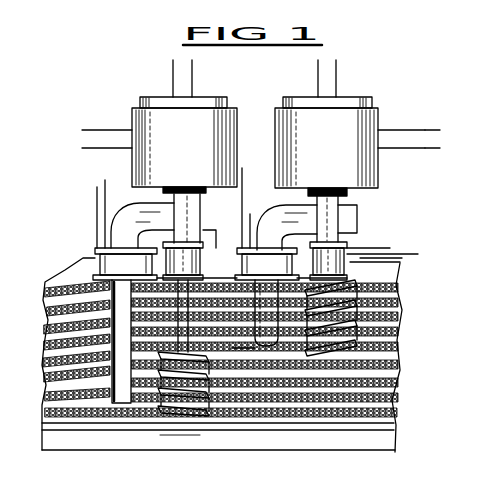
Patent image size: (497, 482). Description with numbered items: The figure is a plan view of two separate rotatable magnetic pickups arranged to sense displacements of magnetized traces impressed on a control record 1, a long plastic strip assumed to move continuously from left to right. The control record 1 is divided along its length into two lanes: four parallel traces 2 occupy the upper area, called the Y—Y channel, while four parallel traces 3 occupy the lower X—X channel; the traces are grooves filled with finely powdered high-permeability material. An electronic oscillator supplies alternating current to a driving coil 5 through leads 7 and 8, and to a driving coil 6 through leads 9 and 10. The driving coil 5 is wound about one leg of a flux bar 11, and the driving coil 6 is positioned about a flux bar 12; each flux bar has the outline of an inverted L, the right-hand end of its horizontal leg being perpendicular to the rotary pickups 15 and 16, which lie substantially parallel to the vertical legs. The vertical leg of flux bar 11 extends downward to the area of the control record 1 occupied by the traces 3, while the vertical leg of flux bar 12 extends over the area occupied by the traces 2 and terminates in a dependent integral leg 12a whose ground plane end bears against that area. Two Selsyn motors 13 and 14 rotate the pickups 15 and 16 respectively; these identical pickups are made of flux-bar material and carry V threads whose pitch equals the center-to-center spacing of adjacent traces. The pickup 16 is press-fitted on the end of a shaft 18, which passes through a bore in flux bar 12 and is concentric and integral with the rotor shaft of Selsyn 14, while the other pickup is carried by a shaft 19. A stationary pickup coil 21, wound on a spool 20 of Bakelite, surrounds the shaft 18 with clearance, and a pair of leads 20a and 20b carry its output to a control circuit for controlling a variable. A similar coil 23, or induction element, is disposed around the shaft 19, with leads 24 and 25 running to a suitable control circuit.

The control record 1 is at (340, 438).
The traces 2 is at (400, 287).
The traces 3 is at (42, 376).
The driving coil 5 is at (90, 255).
The driving coil 6 is at (267, 264).
The lead 7 is at (97, 209).
The lead 8 is at (106, 208).
The lead 9 is at (250, 216).
The lead 10 is at (243, 180).
The flux bar 11 is at (142, 225).
The flux bar 12 is at (357, 220).
The dependent integral leg 12a is at (265, 335).
The Selsyn motor 13 is at (148, 93).
The Selsyn motor 14 is at (340, 104).
The rotary pickup 15 is at (175, 420).
The rotary pickup 16 is at (345, 356).
The shaft 18 is at (348, 201).
The shaft 19 is at (153, 205).
The spool 20 is at (461, 172).
The lead 20a is at (390, 248).
The lead 20b is at (402, 258).
The pickup coil 21 is at (352, 250).
The coil 23 is at (199, 261).
The lead 24 is at (205, 201).
The lead 25 is at (228, 248).